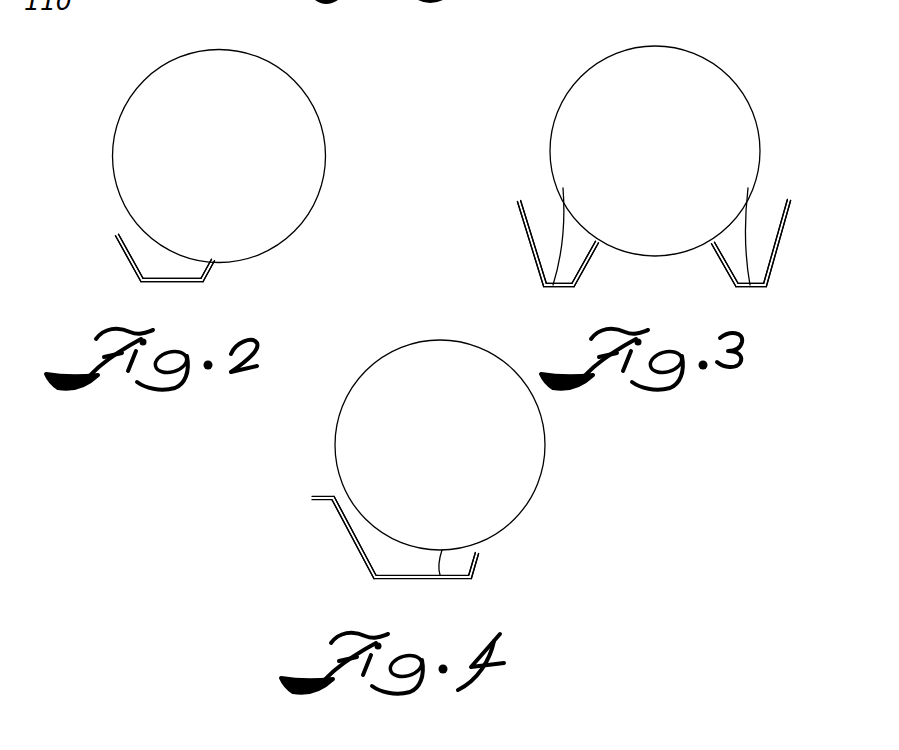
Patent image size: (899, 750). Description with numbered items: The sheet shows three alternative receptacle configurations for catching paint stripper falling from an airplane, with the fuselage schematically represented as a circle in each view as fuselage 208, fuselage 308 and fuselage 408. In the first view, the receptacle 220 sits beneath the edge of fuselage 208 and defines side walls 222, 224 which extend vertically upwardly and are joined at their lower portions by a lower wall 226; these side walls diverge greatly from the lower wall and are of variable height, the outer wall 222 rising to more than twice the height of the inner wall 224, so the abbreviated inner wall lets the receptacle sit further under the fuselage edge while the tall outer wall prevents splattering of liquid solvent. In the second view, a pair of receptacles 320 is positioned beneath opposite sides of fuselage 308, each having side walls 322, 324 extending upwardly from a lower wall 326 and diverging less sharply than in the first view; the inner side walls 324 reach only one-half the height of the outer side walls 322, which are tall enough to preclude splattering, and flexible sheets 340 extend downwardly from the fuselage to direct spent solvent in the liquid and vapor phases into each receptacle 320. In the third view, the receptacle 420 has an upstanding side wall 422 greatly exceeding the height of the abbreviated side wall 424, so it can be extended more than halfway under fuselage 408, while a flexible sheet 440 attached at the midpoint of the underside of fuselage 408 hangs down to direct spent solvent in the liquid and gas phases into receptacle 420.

In FIG. 2, the fuselage 208 is at (113, 137).
In FIG. 2, the receptacle 220 is at (121, 226).
In FIG. 2, the side wall 222 is at (127, 255).
In FIG. 2, the side wall 224 is at (209, 270).
In FIG. 2, the lower wall 226 is at (178, 283).
In FIG. 3, the fuselage 308 is at (550, 157).
In FIG. 3, the receptacle 320 is at (520, 280).
In FIG. 3, the side wall 322 is at (521, 219).
In FIG. 3, the side wall 324 is at (581, 282).
In FIG. 3, the lower wall 326 is at (558, 288).
In FIG. 3, the flexible sheet 340 is at (563, 210).
In FIG. 4, the fuselage 408 is at (336, 438).
In FIG. 4, the receptacle 420 is at (339, 491).
In FIG. 4, the side wall 422 is at (341, 526).
In FIG. 4, the side wall 424 is at (480, 560).
In FIG. 4, the flexible sheet 440 is at (435, 565).